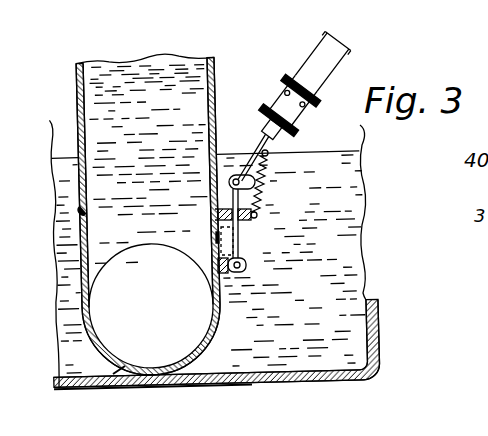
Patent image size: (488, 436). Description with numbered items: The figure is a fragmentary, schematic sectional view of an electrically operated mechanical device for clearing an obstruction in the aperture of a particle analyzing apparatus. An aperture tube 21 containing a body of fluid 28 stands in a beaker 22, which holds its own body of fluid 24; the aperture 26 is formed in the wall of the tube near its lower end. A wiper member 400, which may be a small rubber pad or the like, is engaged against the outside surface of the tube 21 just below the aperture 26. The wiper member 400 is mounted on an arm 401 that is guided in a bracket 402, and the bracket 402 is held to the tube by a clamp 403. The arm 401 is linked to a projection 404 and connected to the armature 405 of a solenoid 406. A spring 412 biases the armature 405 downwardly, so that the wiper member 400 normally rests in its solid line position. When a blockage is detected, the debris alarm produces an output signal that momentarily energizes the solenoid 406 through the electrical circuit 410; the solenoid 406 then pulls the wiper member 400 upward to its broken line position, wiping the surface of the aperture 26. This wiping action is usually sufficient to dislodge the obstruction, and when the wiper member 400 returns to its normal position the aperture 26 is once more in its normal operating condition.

The aperture tube 21 is at (78, 82).
The beaker 22 is at (372, 341).
The body of fluid 24 is at (242, 371).
The aperture 26 is at (118, 391).
The body of fluid 28 is at (178, 58).
The wiper member 400 is at (248, 282).
The arm 401 is at (238, 240).
The bracket 402 is at (222, 205).
The clamp 403 is at (80, 212).
The projection 404 is at (252, 152).
The armature 405 is at (272, 147).
The solenoid 406 is at (305, 114).
The electrical circuit 410 is at (331, 33).
The spring 412 is at (257, 173).